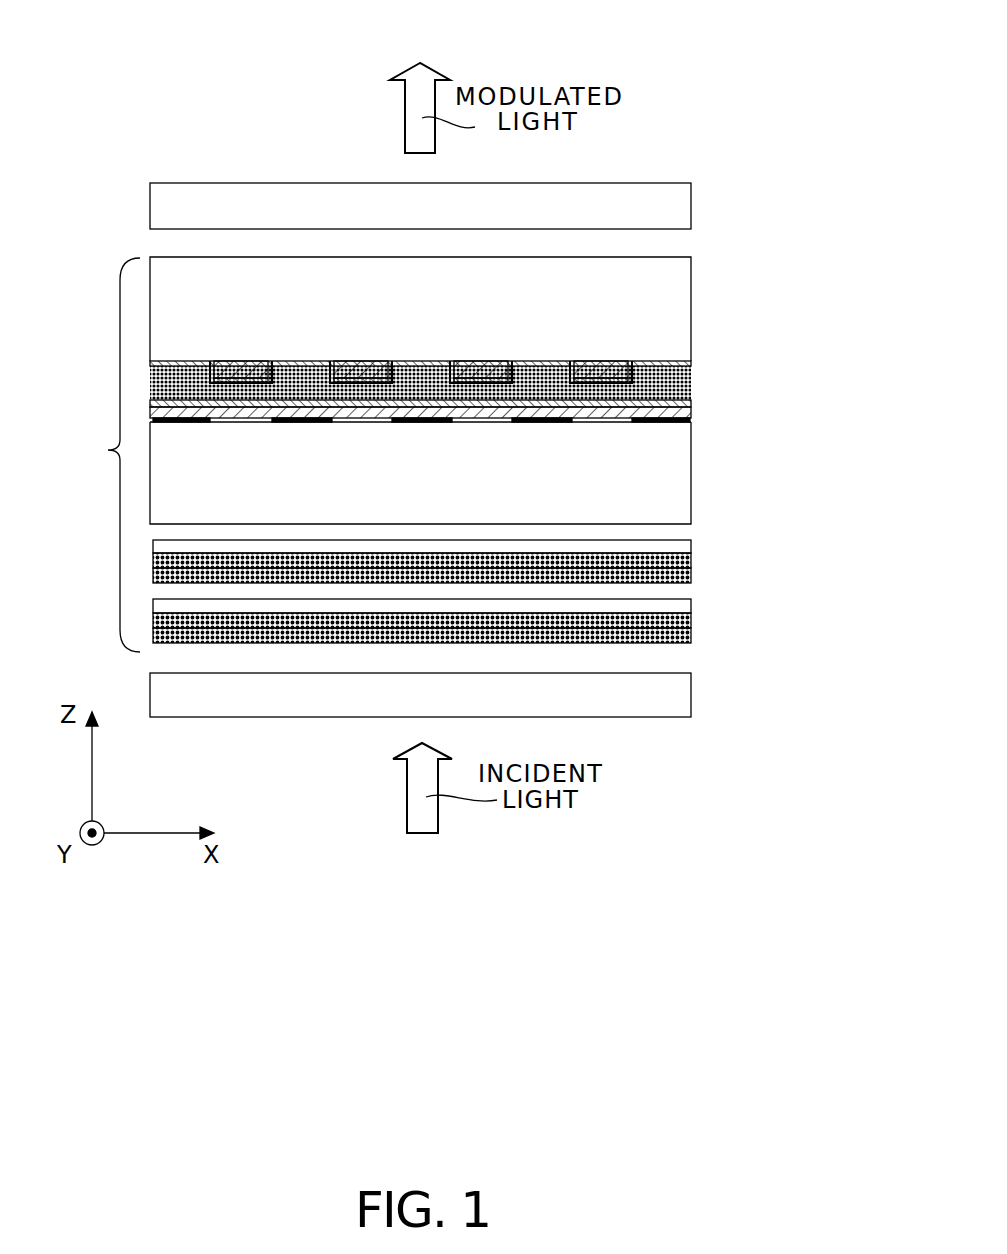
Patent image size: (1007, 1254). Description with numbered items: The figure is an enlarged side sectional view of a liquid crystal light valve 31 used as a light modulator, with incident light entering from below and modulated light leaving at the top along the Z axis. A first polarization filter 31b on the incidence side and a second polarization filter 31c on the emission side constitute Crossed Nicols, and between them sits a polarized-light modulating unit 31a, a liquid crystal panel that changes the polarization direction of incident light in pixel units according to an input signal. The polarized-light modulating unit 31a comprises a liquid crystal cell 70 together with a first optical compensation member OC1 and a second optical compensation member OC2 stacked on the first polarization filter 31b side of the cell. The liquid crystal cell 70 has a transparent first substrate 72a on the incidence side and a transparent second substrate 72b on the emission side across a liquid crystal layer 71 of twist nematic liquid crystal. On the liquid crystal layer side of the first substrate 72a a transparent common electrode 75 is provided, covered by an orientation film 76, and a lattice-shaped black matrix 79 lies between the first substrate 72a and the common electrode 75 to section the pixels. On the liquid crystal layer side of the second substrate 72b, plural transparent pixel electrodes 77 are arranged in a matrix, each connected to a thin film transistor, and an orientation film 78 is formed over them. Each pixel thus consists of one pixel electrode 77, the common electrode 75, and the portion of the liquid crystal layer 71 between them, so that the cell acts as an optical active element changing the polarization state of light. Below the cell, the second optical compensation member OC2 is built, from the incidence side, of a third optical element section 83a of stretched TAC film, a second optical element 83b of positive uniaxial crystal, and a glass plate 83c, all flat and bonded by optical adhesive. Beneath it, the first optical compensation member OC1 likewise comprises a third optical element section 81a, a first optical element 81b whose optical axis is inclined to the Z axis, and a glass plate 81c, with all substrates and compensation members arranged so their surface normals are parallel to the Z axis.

The liquid crystal light valve 31 is at (782, 50).
The polarized-light modulating unit 31a is at (477, 455).
The first polarization filter 31b is at (638, 700).
The second polarization filter 31c is at (630, 195).
The liquid crystal cell 70 is at (740, 274).
The first substrate 72a is at (676, 472).
The second substrate 72b is at (675, 310).
The liquid crystal layer 71 is at (692, 385).
The orientation film 78 is at (692, 362).
The transparent pixel electrode 77 is at (597, 372).
The orientation film 76 is at (692, 405).
The common electrode 75 is at (692, 414).
The black matrix 79 is at (676, 420).
The third optical element section 83a is at (695, 575).
The second optical element 83b is at (695, 562).
The glass plate 83c is at (695, 548).
The third optical element section 81a is at (695, 635).
The first optical element 81b is at (695, 618).
The glass plate 81c is at (695, 605).
The first optical compensation member OC1 is at (530, 645).
The second optical compensation member OC2 is at (530, 550).